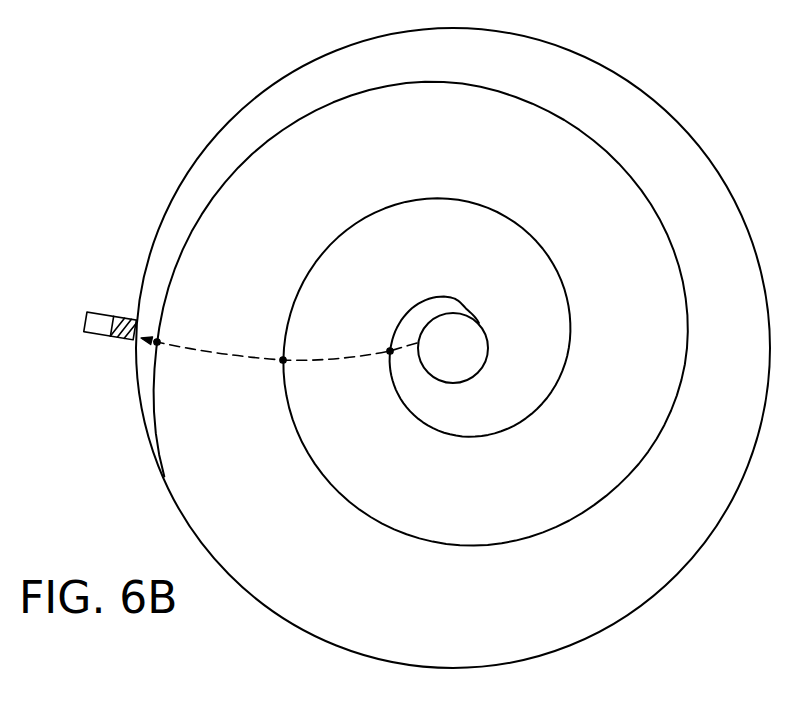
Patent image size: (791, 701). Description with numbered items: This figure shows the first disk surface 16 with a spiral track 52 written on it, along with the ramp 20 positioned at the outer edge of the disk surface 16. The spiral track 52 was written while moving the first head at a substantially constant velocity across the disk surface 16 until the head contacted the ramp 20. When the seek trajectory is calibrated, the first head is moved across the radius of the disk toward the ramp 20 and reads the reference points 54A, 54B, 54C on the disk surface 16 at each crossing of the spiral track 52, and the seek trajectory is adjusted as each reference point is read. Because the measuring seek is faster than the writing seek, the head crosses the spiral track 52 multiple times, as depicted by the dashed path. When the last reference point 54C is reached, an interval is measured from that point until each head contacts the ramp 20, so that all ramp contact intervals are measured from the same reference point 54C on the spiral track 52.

The first disk surface 16 is at (678, 101).
The spiral track 52 is at (223, 187).
The reference point 54A is at (383, 343).
The reference point 54B is at (276, 351).
The last reference point 54C is at (168, 337).
The ramp 20 is at (98, 345).